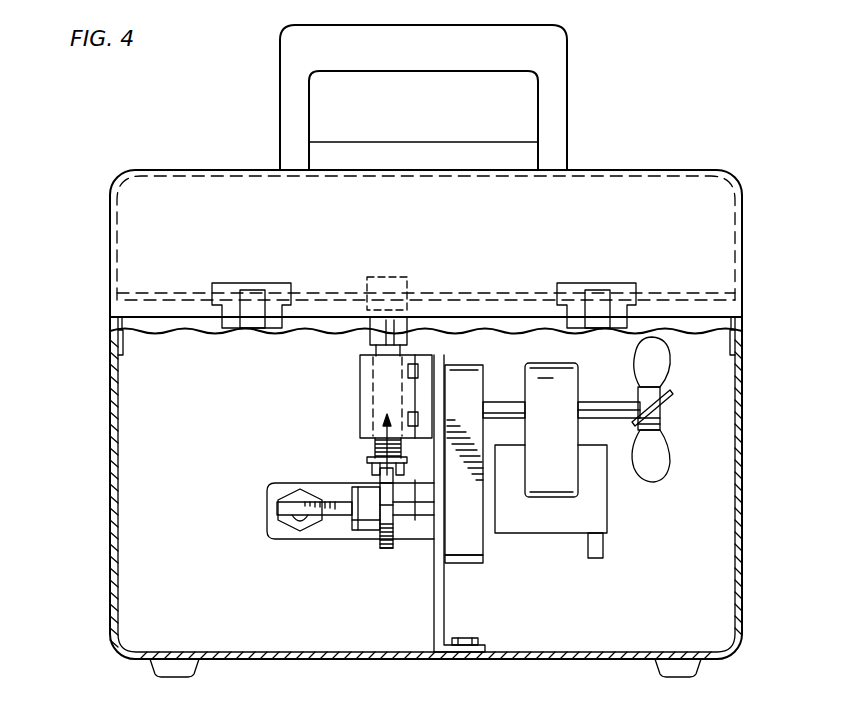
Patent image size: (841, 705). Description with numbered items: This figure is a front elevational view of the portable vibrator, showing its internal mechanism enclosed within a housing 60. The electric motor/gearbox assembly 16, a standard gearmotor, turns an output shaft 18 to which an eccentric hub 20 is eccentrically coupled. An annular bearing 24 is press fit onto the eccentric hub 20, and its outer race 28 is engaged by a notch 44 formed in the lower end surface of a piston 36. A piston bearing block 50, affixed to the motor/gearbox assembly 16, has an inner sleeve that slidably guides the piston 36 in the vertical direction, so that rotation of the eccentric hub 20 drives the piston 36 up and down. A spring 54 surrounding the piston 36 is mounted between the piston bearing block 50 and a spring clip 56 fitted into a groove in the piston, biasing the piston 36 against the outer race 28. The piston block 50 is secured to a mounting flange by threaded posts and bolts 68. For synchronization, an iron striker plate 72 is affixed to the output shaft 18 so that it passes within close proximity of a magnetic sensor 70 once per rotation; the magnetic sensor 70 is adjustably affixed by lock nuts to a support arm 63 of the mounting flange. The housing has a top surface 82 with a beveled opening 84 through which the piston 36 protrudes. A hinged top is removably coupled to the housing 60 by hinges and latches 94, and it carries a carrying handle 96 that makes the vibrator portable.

The electric motor/gearbox assembly 16 is at (483, 548).
The output shaft 18 is at (410, 527).
The eccentric hub 20 is at (360, 532).
The annular bearing 24 is at (380, 495).
The outer race 28 is at (382, 547).
The piston 36 is at (407, 282).
The notch 44 is at (414, 480).
The piston bearing block 50 is at (360, 360).
The spring 54 is at (373, 445).
The spring clip 56 is at (368, 460).
The housing 60 is at (741, 440).
The support arm 63 is at (278, 483).
The bolts 68 is at (420, 372).
The magnetic sensor 70 is at (292, 530).
The iron striker plate 72 is at (327, 517).
The top surface 82 is at (692, 297).
The beveled opening 84 is at (366, 292).
The latches 94 is at (227, 283).
The carrying handle 96 is at (557, 76).